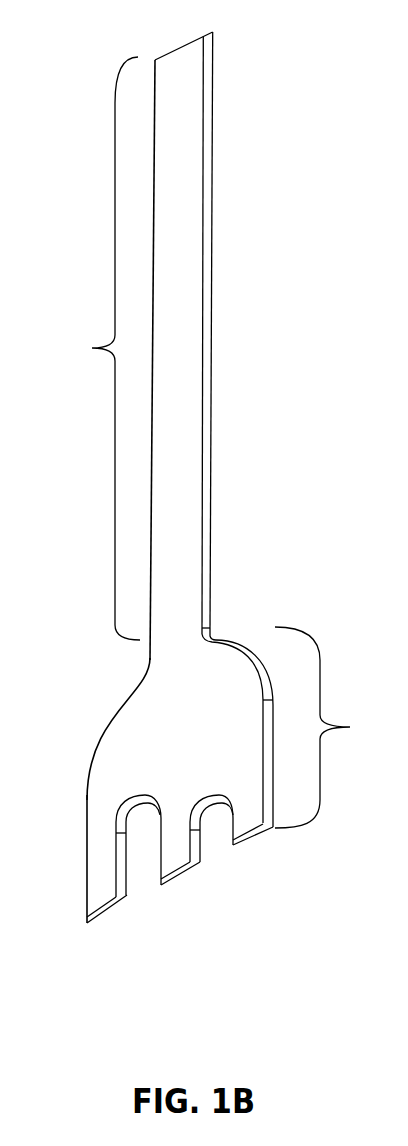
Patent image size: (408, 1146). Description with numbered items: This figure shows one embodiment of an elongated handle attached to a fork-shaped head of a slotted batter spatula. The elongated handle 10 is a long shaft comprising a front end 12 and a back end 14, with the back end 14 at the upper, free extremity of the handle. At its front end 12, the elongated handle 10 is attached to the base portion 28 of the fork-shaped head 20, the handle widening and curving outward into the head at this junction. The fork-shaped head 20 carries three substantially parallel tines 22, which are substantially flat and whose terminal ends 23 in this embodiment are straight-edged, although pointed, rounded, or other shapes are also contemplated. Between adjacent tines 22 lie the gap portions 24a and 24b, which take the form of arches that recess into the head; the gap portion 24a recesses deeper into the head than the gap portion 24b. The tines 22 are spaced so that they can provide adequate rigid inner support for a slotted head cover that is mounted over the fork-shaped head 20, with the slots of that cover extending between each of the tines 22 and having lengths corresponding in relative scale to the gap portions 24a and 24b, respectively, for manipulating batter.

The elongated handle 10 is at (97, 358).
The front end 12 is at (191, 621).
The back end 14 is at (199, 56).
The fork-shaped head 20 is at (350, 727).
The tines 22 is at (91, 889).
The terminal ends 23 is at (282, 840).
The gap portion 24a is at (140, 821).
The gap portion 24b is at (217, 821).
The base portion 28 is at (155, 657).